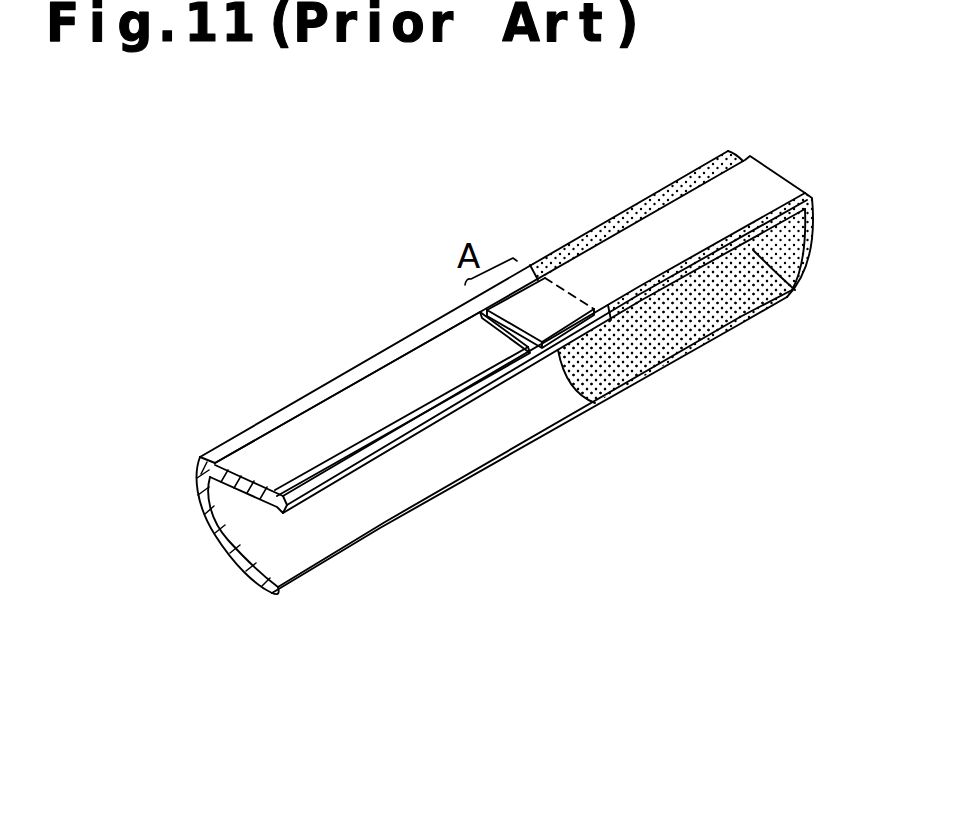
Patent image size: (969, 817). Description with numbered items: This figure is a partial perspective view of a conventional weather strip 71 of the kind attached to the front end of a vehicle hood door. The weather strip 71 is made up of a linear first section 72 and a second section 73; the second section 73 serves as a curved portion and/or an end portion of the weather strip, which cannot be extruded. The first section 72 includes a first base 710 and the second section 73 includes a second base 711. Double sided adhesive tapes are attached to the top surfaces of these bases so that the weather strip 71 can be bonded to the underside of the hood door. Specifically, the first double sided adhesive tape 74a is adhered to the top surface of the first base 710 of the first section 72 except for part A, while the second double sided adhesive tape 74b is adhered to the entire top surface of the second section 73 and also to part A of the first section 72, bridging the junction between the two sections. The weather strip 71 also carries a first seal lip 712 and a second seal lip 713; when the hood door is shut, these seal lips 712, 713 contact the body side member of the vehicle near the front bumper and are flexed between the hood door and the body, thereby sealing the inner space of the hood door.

The weather strip 71 is at (348, 346).
The first section 72 is at (400, 338).
The second section 73 is at (588, 243).
The first double sided adhesive tape 74a is at (298, 432).
The second double sided adhesive tape 74b is at (678, 200).
The first base 710 is at (468, 405).
The second base 711 is at (707, 268).
The first seal lip 712 is at (392, 500).
The second seal lip 713 is at (642, 367).